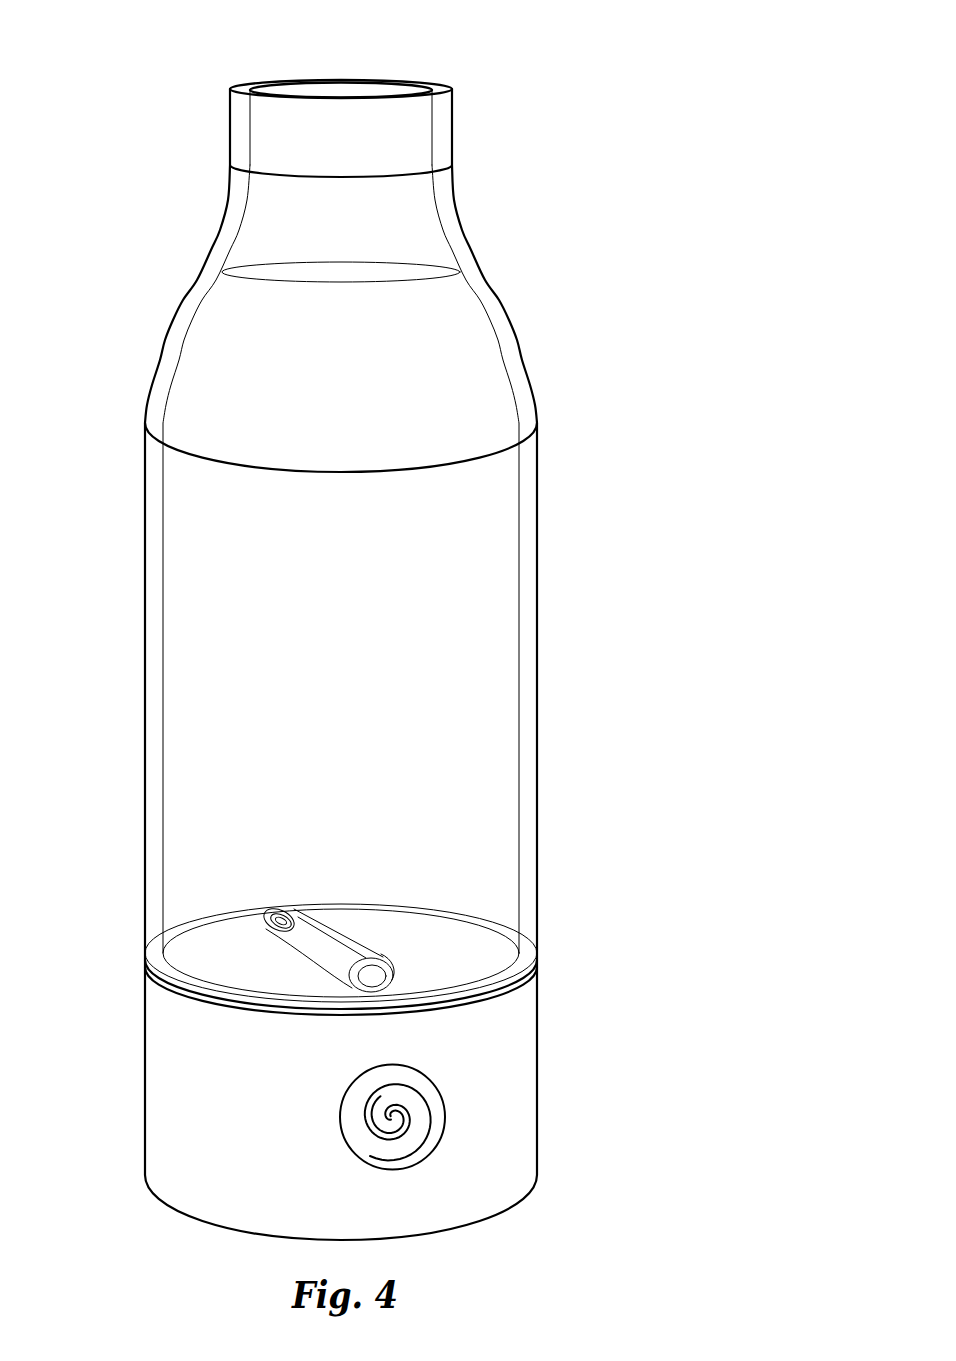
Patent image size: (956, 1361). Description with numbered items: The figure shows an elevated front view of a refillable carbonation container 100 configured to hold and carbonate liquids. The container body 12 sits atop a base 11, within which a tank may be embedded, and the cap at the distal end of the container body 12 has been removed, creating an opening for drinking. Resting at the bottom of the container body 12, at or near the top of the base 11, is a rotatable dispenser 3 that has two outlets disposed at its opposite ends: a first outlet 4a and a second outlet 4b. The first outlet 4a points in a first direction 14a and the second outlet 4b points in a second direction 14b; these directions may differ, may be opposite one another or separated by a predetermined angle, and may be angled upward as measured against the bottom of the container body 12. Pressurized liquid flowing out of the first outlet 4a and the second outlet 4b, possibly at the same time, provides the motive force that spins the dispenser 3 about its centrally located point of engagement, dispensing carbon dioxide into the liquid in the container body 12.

The refillable carbonation container 100 is at (543, 75).
The container body 12 is at (508, 875).
The base 11 is at (508, 1148).
The dispenser 3 is at (305, 952).
The first outlet 4a is at (385, 953).
The second outlet 4b is at (277, 918).
The first direction 14a is at (383, 953).
The second direction 14b is at (278, 918).